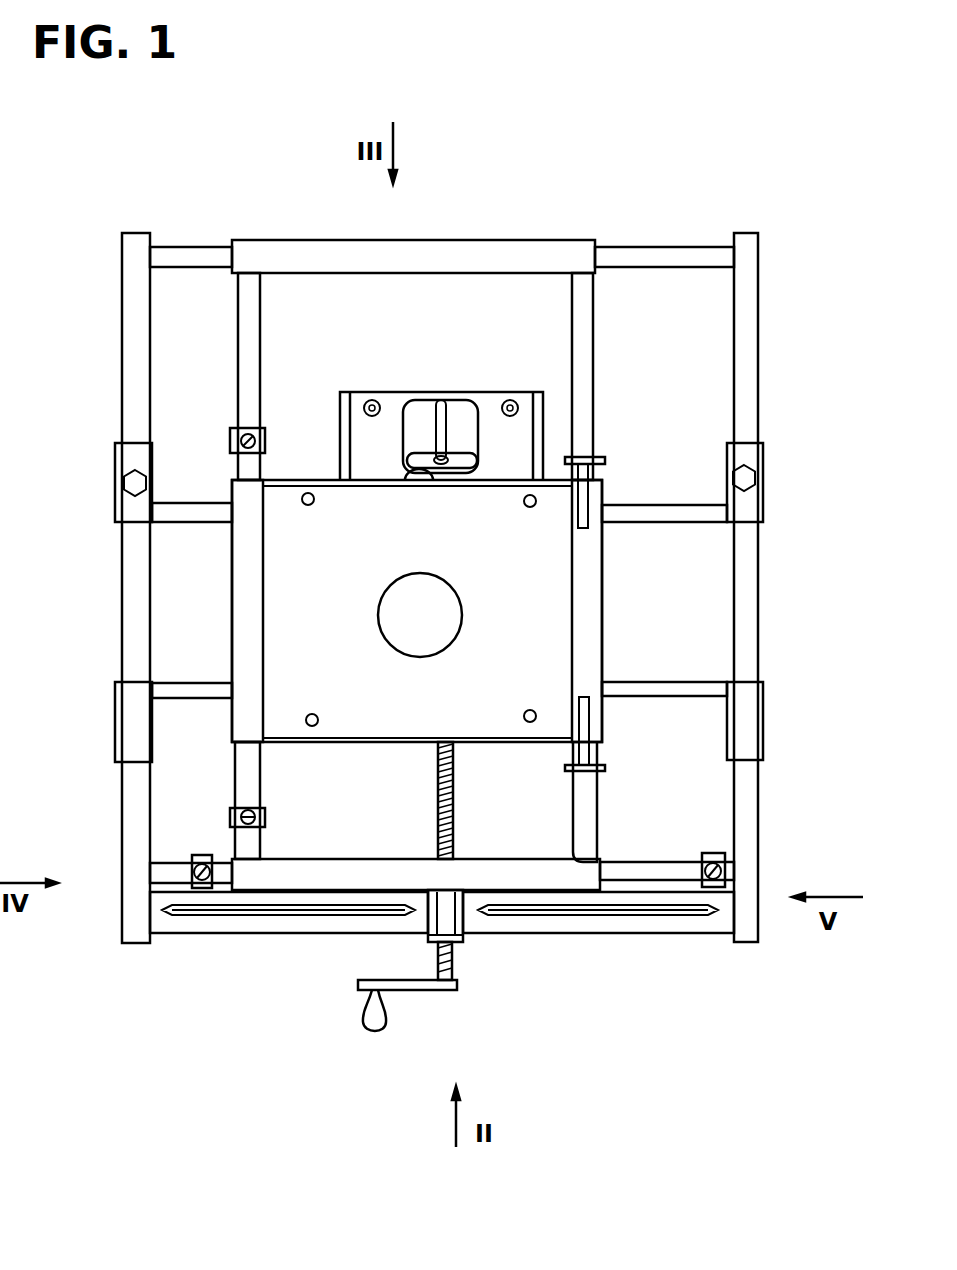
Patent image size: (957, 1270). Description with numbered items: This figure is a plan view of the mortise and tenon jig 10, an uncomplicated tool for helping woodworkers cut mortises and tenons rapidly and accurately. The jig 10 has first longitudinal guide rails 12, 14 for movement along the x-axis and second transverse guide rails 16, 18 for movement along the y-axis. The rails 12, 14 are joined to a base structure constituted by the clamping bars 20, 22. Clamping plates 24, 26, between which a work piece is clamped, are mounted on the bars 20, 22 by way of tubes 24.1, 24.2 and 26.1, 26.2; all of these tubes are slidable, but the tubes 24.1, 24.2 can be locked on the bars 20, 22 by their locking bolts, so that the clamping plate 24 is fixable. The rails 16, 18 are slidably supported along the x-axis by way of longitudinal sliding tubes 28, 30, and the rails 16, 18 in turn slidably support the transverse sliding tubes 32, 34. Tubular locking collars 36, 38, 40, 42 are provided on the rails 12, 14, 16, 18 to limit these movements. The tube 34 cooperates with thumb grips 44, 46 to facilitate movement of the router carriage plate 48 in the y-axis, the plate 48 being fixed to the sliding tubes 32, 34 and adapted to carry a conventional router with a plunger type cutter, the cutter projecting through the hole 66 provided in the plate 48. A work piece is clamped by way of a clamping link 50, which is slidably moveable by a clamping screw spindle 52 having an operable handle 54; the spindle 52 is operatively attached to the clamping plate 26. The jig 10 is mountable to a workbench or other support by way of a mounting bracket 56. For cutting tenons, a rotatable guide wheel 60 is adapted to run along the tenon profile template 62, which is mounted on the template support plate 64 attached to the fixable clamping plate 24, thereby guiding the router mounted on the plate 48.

The mortise and tenon jig 10 is at (762, 125).
The first longitudinal guide rail 12 is at (192, 255).
The first longitudinal guide rail 14 is at (644, 868).
The second transverse guide rail 16 is at (245, 783).
The second transverse guide rail 18 is at (583, 321).
The clamping bar 20 is at (748, 328).
The clamping bar 22 is at (133, 845).
The clamping plate 24 is at (665, 510).
The tube 24.1 is at (125, 462).
The tube 24.2 is at (750, 468).
The clamping plate 26 is at (634, 683).
The tube 26.1 is at (133, 733).
The tube 26.2 is at (757, 713).
The longitudinal sliding tube 28 is at (290, 245).
The longitudinal sliding tube 30 is at (290, 876).
The transverse sliding tube 32 is at (245, 553).
The transverse sliding tube 34 is at (590, 560).
The tubular locking collar 36 is at (200, 857).
The tubular locking collar 38 is at (709, 853).
The tubular locking collar 40 is at (262, 432).
The tubular locking collar 42 is at (265, 818).
The thumb grip 44 is at (597, 458).
The thumb grip 46 is at (605, 767).
The router carriage plate 48 is at (280, 634).
The clamping link 50 is at (567, 935).
The clamping screw spindle 52 is at (455, 960).
The handle 54 is at (400, 990).
The mounting bracket 56 is at (497, 405).
The guide wheel 60 is at (418, 473).
The tenon profile template 62 is at (462, 463).
The template support plate 64 is at (413, 415).
The hole 66 is at (448, 628).